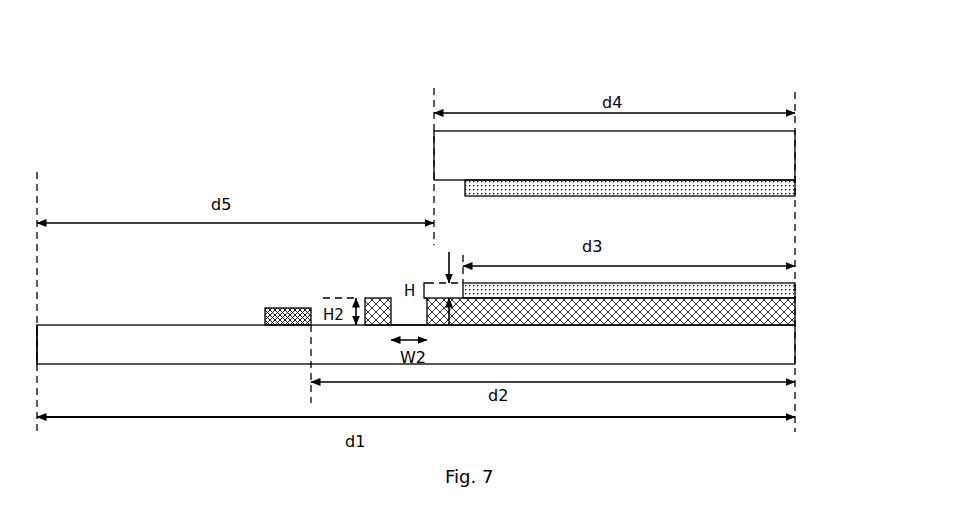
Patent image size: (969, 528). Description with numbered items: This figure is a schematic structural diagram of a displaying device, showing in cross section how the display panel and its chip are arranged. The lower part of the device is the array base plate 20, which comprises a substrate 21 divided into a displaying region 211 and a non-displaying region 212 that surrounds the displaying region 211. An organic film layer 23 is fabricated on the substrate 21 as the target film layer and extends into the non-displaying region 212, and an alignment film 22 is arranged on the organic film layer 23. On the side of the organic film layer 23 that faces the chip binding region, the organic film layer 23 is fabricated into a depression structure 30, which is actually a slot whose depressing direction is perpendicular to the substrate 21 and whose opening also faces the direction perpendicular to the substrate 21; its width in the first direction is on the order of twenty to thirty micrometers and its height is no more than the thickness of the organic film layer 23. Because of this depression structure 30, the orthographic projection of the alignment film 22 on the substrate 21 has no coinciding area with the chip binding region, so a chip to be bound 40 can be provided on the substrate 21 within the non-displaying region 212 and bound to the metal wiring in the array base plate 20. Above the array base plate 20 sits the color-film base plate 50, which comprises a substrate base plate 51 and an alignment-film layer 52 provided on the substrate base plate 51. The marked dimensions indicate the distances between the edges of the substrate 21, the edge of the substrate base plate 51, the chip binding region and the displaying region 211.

The non-displaying region 212 is at (349, 132).
The displaying region 211 is at (832, 100).
The color-film base plate 50 is at (660, 155).
The substrate base plate 51 is at (770, 152).
The alignment-film layer 52 is at (775, 188).
The array base plate 20 is at (465, 303).
The substrate 21 is at (780, 355).
The alignment film 22 is at (778, 290).
The organic film layer 23 is at (778, 320).
The chip to be bound 40 is at (292, 308).
The depression structure 30 is at (416, 318).